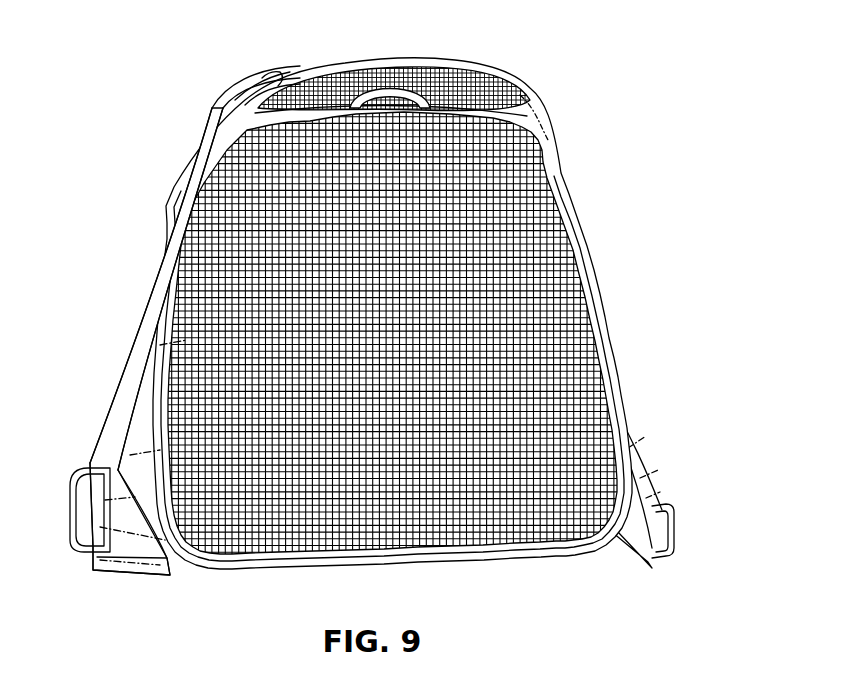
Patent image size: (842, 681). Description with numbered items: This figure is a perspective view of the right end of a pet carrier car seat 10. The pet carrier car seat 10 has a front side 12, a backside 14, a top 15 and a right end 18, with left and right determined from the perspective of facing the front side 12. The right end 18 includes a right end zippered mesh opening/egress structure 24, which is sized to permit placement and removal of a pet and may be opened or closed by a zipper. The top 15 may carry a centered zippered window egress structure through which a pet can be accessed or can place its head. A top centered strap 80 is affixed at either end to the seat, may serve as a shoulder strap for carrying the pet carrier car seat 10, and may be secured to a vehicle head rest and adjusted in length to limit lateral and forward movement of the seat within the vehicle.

The pet carrier car seat 10 is at (392, 293).
The front side 12 is at (120, 302).
The backside 14 is at (580, 240).
The top 15 is at (403, 58).
The right end 18 is at (404, 330).
The right end zippered mesh opening/egress structure 24 is at (540, 196).
The top centered strap 80 is at (233, 133).